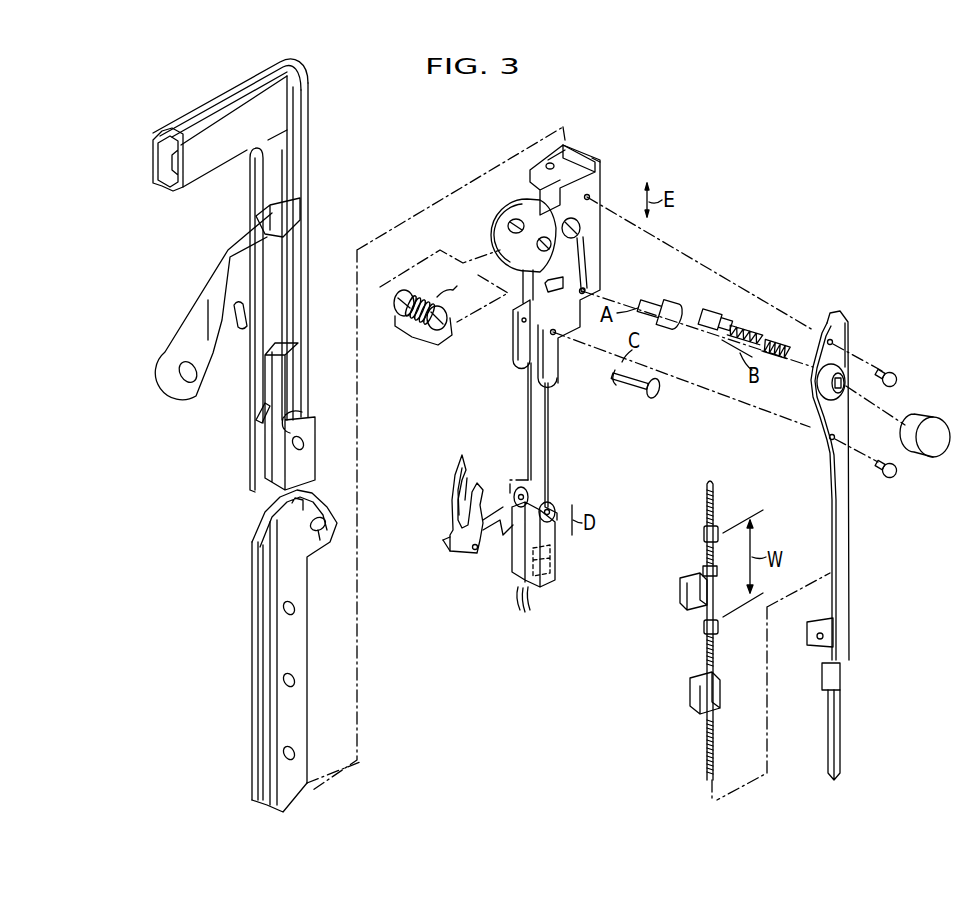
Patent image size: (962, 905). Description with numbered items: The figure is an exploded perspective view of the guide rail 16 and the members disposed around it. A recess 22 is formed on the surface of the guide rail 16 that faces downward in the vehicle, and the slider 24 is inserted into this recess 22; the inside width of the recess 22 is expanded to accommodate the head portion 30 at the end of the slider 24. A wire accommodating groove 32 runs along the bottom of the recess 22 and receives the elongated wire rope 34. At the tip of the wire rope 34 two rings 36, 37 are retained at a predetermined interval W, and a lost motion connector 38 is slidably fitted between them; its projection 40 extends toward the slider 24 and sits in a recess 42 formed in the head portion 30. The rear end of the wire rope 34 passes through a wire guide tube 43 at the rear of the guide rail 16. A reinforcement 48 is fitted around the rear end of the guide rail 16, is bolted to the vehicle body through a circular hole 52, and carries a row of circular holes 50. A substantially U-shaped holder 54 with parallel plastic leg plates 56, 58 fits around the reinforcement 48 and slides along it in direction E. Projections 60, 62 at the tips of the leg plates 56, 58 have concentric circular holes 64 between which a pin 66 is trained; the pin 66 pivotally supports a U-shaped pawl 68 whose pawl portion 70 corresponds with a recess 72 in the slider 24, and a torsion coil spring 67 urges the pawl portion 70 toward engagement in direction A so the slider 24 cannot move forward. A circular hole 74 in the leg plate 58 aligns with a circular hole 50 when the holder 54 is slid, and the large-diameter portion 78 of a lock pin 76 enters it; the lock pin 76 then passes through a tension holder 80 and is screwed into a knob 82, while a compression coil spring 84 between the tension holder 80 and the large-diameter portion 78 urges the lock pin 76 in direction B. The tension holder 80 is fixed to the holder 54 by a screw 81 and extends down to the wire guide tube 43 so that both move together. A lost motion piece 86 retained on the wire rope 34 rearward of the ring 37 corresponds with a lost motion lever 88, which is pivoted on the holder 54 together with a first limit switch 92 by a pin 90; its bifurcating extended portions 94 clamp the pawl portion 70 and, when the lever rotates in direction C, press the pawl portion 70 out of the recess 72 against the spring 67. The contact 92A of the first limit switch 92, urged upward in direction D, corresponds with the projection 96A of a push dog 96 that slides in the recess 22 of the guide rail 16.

The guide rail 16 is at (150, 148).
The recess 22 is at (162, 180).
The slider 24 is at (187, 318).
The head portion 30 is at (258, 217).
The wire accommodating groove 32 is at (171, 128).
The wire rope 34 is at (705, 492).
The ring 36 is at (702, 534).
The ring 37 is at (718, 629).
The lost motion connector 38 is at (697, 570).
The projection 40 is at (679, 600).
The recess 42 is at (302, 292).
The wire guide tube 43 is at (841, 728).
The reinforcement 48 is at (252, 572).
The circular holes 50 is at (290, 602).
The circular hole 52 is at (320, 518).
The holder 54 is at (603, 162).
The leg plate 56 is at (553, 150).
The leg plate 58 is at (604, 165).
The projection 60 is at (514, 210).
The projection 62 is at (540, 222).
The circular holes 64 is at (506, 234).
The pin 66 is at (657, 297).
The torsion coil spring 67 is at (427, 300).
The pawl 68 is at (425, 347).
The pawl portion 70 is at (447, 340).
The recess 72 is at (250, 333).
The circular hole 74 is at (587, 233).
The lock pin 76 is at (743, 313).
The large-diameter portion 78 is at (712, 303).
The tension holder 80 is at (853, 333).
The screw 81 is at (895, 372).
The knob 82 is at (925, 416).
The compression coil spring 84 is at (780, 336).
The lost motion piece 86 is at (697, 694).
The lost motion lever 88 is at (450, 543).
The pin 90 is at (628, 390).
The first limit switch 92 is at (557, 548).
The contact 92A is at (557, 568).
The extended portions 94 is at (462, 462).
The push dog 96 is at (293, 418).
The projection 96A is at (256, 412).